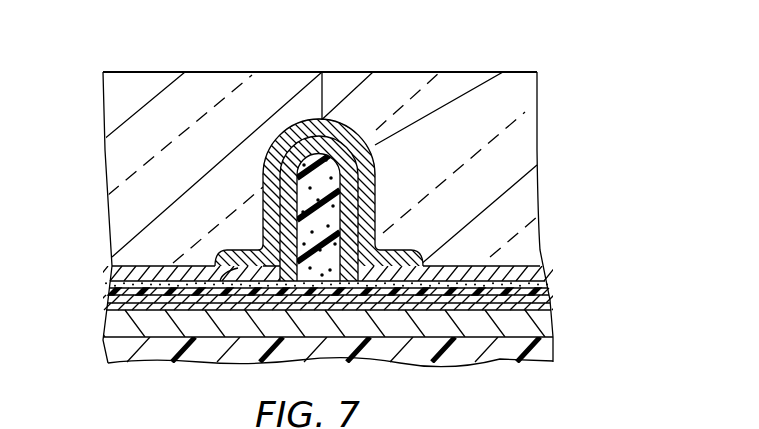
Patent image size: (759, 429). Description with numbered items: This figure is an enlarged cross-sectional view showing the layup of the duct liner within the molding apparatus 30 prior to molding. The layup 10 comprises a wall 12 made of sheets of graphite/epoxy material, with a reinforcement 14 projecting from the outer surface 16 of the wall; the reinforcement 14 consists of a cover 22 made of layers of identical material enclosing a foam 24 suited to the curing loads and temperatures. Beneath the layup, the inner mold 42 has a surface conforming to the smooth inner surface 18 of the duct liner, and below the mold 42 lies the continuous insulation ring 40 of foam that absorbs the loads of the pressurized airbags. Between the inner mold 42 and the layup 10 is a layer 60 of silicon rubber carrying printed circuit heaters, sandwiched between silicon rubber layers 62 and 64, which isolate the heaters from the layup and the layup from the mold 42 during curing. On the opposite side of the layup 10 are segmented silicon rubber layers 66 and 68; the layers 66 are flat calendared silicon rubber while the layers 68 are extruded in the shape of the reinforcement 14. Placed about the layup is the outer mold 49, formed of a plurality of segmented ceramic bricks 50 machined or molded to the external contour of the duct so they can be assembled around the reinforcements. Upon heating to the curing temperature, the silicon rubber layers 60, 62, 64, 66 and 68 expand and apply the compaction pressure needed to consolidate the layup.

The layup of the duct liner 10 is at (323, 154).
The wall 12 is at (550, 288).
The reinforcement 14 is at (284, 142).
The outer surface 16 is at (158, 276).
The inner surface 18 is at (135, 305).
The cover 22 is at (376, 138).
The foam core 24 is at (358, 178).
The apparatus 30 is at (613, 80).
The insulation ring 40 is at (500, 362).
The inner mold 42 is at (552, 335).
The outer mold 49 is at (175, 70).
The ceramic bricks 50 is at (337, 72).
The layer of silicon rubber having printed circuit heaters 60 is at (553, 302).
The silicon rubber layer 62 is at (552, 297).
The silicon rubber layer 64 is at (557, 310).
The flat calendared silicon rubber layers 66 is at (117, 278).
The extruded silicon rubber layers 68 is at (455, 265).